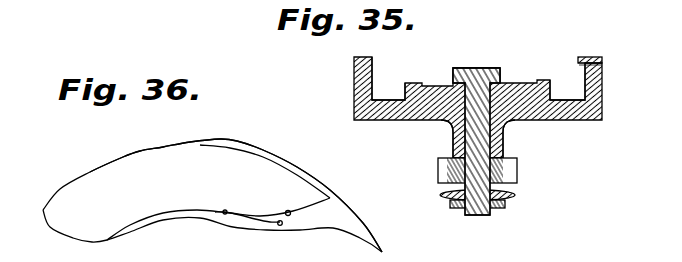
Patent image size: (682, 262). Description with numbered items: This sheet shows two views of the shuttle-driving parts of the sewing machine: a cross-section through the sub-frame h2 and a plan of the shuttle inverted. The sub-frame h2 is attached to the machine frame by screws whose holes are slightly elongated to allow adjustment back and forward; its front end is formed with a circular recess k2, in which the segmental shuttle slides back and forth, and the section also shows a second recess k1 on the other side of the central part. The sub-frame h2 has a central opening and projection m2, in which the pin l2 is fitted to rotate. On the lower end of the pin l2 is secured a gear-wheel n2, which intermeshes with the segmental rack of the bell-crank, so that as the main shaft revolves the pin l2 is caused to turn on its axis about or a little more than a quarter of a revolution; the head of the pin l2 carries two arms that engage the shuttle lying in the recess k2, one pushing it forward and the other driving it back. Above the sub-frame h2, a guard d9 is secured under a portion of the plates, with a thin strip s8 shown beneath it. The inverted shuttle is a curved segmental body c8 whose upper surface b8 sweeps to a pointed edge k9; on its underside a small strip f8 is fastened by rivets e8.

In FIG. 35, the sub-frame h2 is at (527, 118).
In FIG. 35, the circular recess k2 is at (388, 79).
In FIG. 35, the right recess k1 is at (567, 82).
In FIG. 35, the central opening and projection m2 is at (453, 142).
In FIG. 35, the guard d9 is at (590, 57).
In FIG. 35, the thin strip s8 is at (582, 70).
In FIG. 35, the gear-wheel n2 is at (517, 172).
In FIG. 35, the pin l2 is at (483, 68).
In FIG. 36, the blade body c8 is at (212, 195).
In FIG. 36, the blade upper surface b8 is at (130, 153).
In FIG. 36, the blade edge k9 is at (367, 233).
In FIG. 36, the spring strip f8 is at (278, 225).
In FIG. 36, the rivet e8 is at (288, 216).